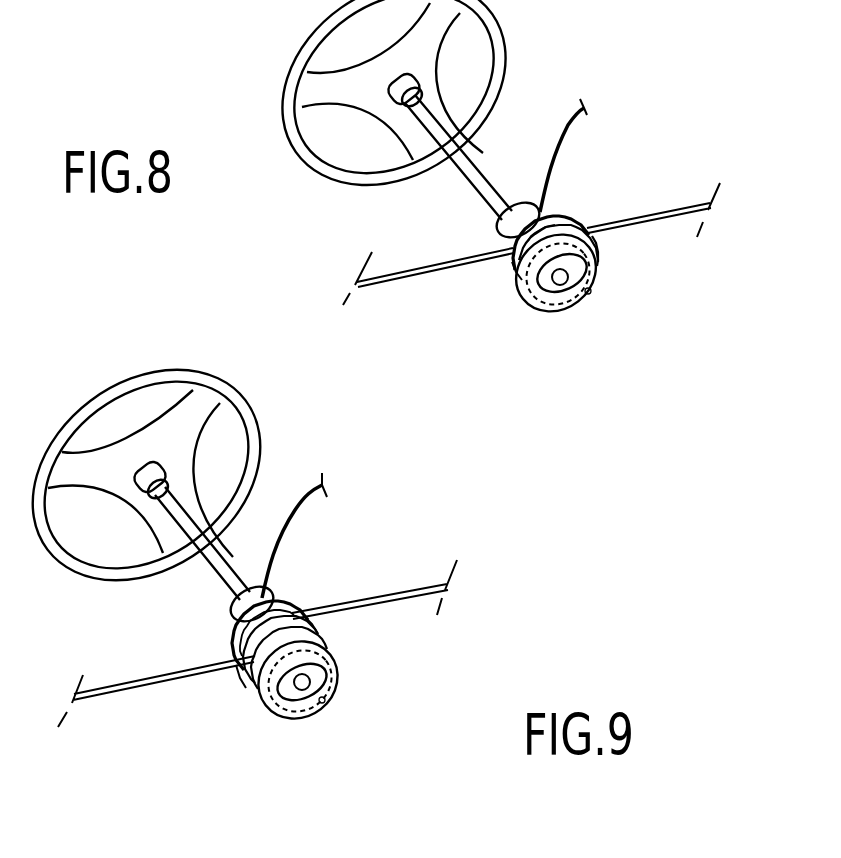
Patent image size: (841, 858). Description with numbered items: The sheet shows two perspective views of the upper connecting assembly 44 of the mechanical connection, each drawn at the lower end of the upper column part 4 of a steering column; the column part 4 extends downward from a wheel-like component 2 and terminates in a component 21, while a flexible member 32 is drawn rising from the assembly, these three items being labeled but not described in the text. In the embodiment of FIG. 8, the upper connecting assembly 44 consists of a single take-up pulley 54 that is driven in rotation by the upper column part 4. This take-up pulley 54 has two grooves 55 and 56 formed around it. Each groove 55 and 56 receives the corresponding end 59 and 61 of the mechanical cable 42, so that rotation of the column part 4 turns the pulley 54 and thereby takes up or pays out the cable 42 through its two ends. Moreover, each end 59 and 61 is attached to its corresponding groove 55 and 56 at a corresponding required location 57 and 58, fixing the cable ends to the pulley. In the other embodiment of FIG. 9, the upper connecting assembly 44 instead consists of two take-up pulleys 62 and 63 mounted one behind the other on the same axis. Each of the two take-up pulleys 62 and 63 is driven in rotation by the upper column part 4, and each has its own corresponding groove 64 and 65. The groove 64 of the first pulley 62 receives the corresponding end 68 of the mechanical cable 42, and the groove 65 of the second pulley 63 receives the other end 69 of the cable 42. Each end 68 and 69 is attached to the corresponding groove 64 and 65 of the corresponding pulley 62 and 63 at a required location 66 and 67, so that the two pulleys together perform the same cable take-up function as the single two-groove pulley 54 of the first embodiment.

In FIG. 8, the steering wheel 2 is at (307, 50).
In FIG. 9, the steering wheel 2 is at (88, 407).
In FIG. 8, the upper column part 4 is at (473, 168).
In FIG. 9, the upper column part 4 is at (220, 570).
In FIG. 8, the column collar 21 is at (503, 230).
In FIG. 9, the column collar 21 is at (233, 612).
In FIG. 8, the cable 32 is at (565, 120).
In FIG. 9, the cable 32 is at (302, 490).
In FIG. 8, the mechanical cable 42 is at (688, 203).
In FIG. 9, the mechanical cable 42 is at (427, 592).
In FIG. 8, the upper connecting assembly 44 is at (585, 336).
In FIG. 9, the upper connecting assembly 44 is at (296, 742).
In FIG. 8, the take-up pulley 54 is at (550, 306).
In FIG. 8, the groove 55 is at (550, 213).
In FIG. 8, the groove 56 is at (577, 217).
In FIG. 8, the required location 57 is at (527, 305).
In FIG. 8, the required location 58 is at (590, 293).
In FIG. 8, the end of the mechanical cable 59 is at (590, 230).
In FIG. 8, the end of the mechanical cable 61 is at (510, 275).
In FIG. 9, the take-up pulley 62 is at (283, 600).
In FIG. 9, the take-up pulley 63 is at (313, 713).
In FIG. 9, the groove 64 is at (233, 647).
In FIG. 9, the groove 65 is at (316, 632).
In FIG. 9, the required location 66 is at (252, 680).
In FIG. 9, the required location 67 is at (313, 700).
In FIG. 9, the end of the mechanical cable 68 is at (310, 617).
In FIG. 9, the end of the mechanical cable 69 is at (230, 683).